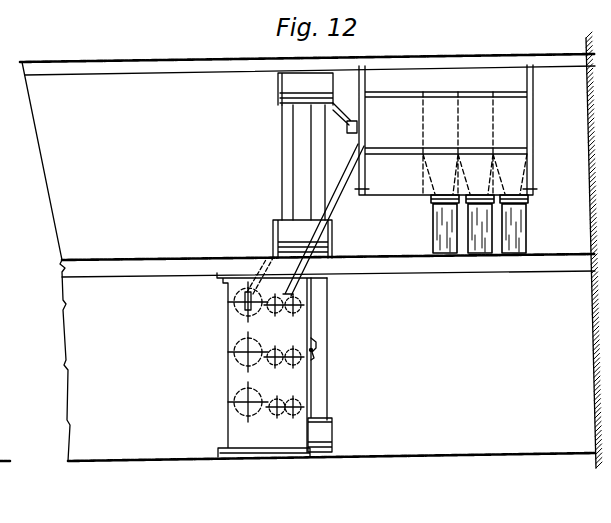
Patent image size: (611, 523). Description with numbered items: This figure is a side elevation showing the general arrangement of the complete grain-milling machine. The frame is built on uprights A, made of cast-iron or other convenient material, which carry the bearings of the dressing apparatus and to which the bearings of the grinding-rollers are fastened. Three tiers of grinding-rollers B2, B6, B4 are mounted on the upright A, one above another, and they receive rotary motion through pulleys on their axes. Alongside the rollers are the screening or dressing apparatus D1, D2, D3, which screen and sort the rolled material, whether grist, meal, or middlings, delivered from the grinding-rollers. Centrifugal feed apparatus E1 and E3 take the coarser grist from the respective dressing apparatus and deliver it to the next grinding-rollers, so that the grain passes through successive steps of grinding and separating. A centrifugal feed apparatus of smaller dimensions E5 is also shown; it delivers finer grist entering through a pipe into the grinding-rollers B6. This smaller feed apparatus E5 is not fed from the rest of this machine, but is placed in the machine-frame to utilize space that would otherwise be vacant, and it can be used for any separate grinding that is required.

The upright A is at (272, 365).
The centrifugal feed apparatus E1 is at (240, 306).
The screening or dressing apparatus D3 is at (245, 311).
The grinding-rollers B2 is at (302, 303).
The screening or dressing apparatus D1 is at (224, 354).
The grinding-rollers B6 is at (303, 358).
The centrifugal feed apparatus of smaller dimensions E5 is at (313, 350).
The centrifugal feed apparatus E3 is at (226, 396).
The screening or dressing apparatus D2 is at (247, 410).
The grinding-rollers B4 is at (302, 400).